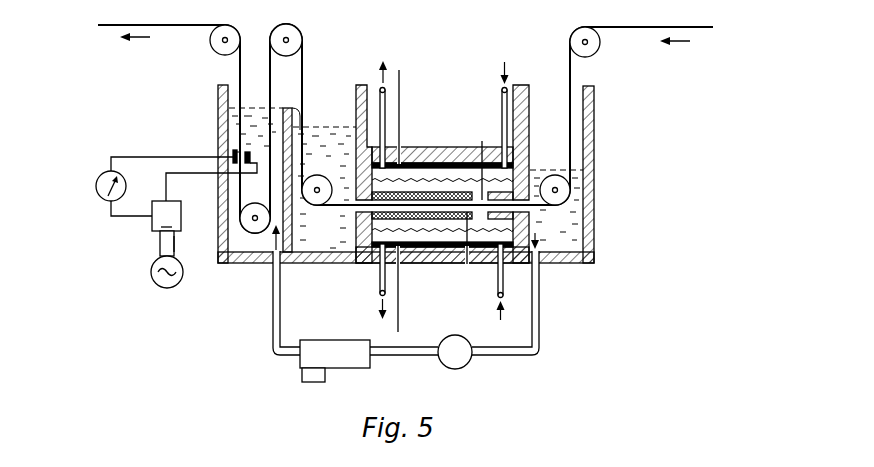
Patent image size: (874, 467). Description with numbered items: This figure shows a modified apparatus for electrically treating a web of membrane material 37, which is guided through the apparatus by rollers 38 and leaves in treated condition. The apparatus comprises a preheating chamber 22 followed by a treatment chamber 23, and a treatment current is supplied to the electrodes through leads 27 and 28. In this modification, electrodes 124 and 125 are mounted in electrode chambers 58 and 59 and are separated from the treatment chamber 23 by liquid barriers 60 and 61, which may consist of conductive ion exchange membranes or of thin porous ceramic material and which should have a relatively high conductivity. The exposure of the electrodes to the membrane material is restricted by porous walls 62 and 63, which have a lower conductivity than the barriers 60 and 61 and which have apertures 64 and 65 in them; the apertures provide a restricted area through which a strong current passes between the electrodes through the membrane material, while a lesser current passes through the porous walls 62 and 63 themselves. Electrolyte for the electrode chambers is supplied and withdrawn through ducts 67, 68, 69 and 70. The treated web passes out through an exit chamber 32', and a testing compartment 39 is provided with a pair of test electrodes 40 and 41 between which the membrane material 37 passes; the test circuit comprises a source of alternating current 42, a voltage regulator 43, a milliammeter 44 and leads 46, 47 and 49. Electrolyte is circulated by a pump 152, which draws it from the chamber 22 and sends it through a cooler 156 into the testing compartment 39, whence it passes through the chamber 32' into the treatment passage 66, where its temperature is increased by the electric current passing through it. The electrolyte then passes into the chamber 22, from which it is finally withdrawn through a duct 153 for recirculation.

The preheating chamber 22 is at (566, 245).
The treatment chamber 23 is at (467, 263).
The lead 27 is at (400, 104).
The lead 28 is at (398, 329).
The exit chamber 32' is at (316, 205).
The membrane material 37 is at (673, 27).
The rollers 38 is at (571, 40).
The testing compartment 39 is at (256, 240).
The test electrode 40 is at (233, 156).
The test electrode 41 is at (249, 155).
The source of alternating current 42 is at (163, 289).
The voltage regulator 43 is at (146, 216).
The milliammeter 44 is at (97, 188).
The lead 46 is at (174, 248).
The lead 47 is at (160, 247).
The lead 49 is at (163, 156).
The electrode chamber 58 is at (410, 173).
The electrode chamber 59 is at (415, 264).
The liquid barrier 60 is at (527, 167).
The liquid barrier 61 is at (529, 221).
The porous wall 62 is at (372, 191).
The porous wall 63 is at (372, 231).
The aperture 64 is at (487, 162).
The aperture 65 is at (470, 264).
The treatment passage 66 is at (372, 214).
The duct 67 is at (501, 100).
The duct 68 is at (380, 94).
The duct 69 is at (498, 292).
The duct 70 is at (379, 283).
The electrode 124 is at (436, 153).
The electrode 125 is at (438, 264).
The pump 152 is at (465, 364).
The duct 153 is at (539, 312).
The cooler 156 is at (343, 340).